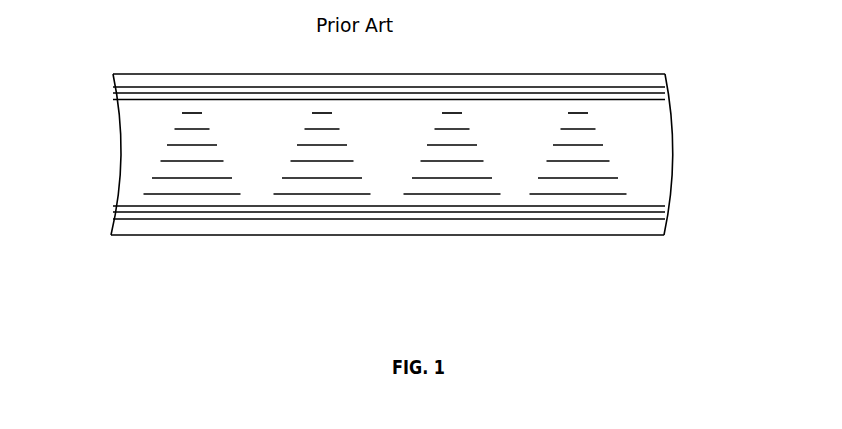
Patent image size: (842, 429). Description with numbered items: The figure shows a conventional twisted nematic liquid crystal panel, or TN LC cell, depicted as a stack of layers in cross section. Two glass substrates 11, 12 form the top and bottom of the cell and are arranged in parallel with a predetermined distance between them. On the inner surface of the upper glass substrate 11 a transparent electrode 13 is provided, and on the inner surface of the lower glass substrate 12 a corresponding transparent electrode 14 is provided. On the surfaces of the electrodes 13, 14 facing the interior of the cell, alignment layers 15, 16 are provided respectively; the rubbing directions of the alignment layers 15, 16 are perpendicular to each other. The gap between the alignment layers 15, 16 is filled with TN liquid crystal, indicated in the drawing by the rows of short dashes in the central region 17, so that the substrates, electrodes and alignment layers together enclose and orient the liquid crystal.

The glass substrate 11 is at (544, 80).
The glass substrate 12 is at (548, 228).
The transparent electrode 13 is at (657, 90).
The transparent electrode 14 is at (657, 214).
The alignment layer 15 is at (635, 98).
The alignment layer 16 is at (643, 206).
The liquid crystal layer 17 is at (140, 150).